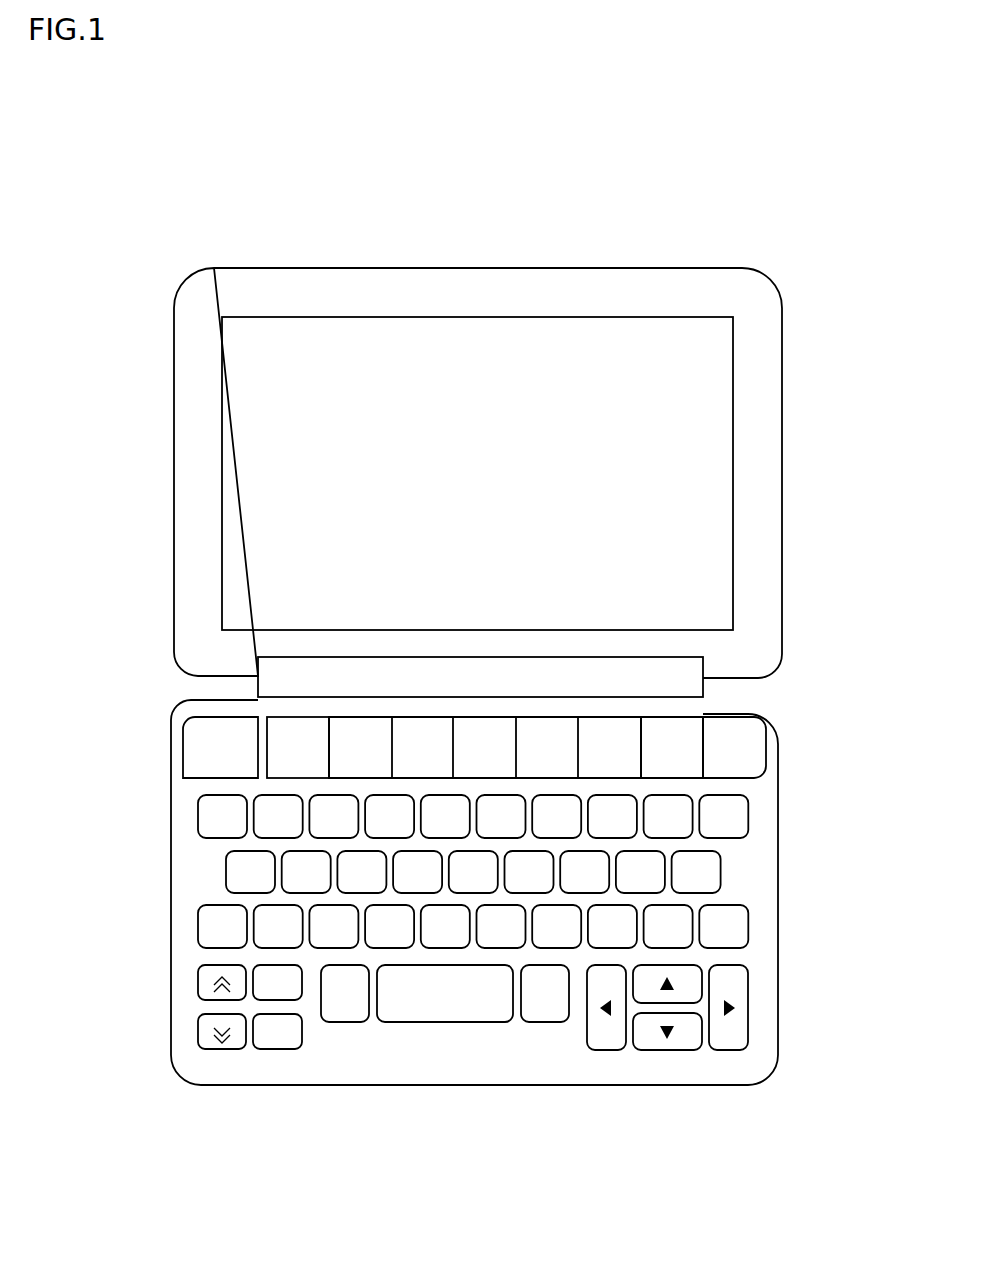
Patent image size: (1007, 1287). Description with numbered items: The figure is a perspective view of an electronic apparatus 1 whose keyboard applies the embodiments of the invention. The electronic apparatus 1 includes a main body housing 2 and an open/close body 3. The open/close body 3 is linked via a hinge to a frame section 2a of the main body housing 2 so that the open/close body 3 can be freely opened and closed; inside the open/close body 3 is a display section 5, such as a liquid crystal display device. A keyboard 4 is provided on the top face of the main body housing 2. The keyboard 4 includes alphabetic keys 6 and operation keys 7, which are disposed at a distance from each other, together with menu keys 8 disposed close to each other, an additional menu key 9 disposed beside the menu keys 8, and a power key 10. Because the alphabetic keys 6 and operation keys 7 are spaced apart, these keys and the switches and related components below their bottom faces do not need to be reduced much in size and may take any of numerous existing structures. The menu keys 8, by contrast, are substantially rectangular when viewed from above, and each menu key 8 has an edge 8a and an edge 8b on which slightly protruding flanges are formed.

The electronic apparatus 1 is at (488, 194).
The main body housing 2 is at (779, 879).
The frame section 2a is at (725, 690).
The open/close body 3 is at (782, 472).
The keyboard 4 is at (343, 1040).
The display section 5 is at (598, 317).
The alphabetic keys 6 is at (720, 870).
The operation keys 7 is at (198, 983).
The menu keys 8 is at (583, 662).
The edge 8a is at (623, 712).
The edge 8b is at (665, 778).
The additional menu key 9 is at (280, 717).
The power key 10 is at (183, 752).